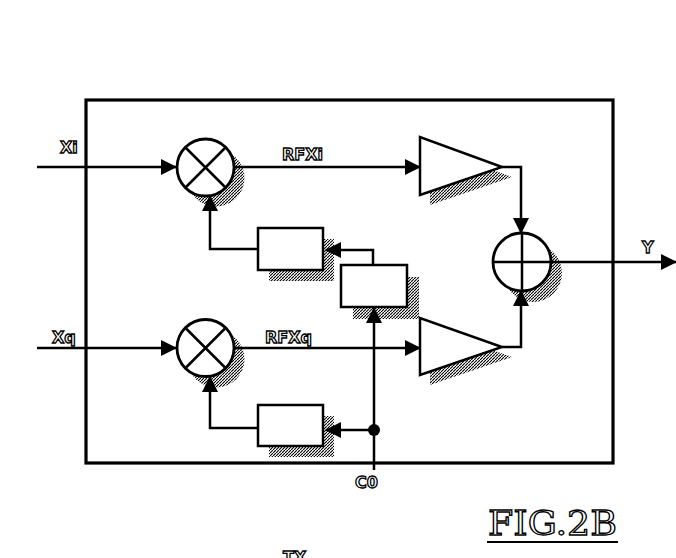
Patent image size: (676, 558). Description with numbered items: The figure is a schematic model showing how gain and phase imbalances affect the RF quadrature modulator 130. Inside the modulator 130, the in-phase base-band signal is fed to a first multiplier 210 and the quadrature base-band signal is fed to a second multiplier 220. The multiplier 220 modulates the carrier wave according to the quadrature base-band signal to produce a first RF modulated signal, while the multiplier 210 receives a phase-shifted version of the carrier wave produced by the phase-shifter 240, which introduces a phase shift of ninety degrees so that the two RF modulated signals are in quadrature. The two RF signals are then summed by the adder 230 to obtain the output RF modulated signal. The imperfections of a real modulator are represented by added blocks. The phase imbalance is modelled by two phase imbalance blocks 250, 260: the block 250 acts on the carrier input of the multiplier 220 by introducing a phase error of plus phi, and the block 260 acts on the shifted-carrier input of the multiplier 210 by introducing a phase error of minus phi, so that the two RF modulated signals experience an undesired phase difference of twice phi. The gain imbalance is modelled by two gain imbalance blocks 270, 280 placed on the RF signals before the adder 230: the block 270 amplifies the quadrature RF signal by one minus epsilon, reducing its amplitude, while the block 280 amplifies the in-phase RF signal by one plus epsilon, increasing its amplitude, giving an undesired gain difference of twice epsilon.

The RF quadrature modulator 130 is at (523, 100).
The multiplier 210 is at (232, 146).
The multiplier 220 is at (233, 334).
The adder 230 is at (543, 234).
The phase-shifter 240 is at (397, 263).
The phase imbalance block 250 is at (257, 446).
The phase imbalance block 260 is at (257, 270).
The gain imbalance block 270 is at (473, 357).
The gain imbalance block 280 is at (480, 158).